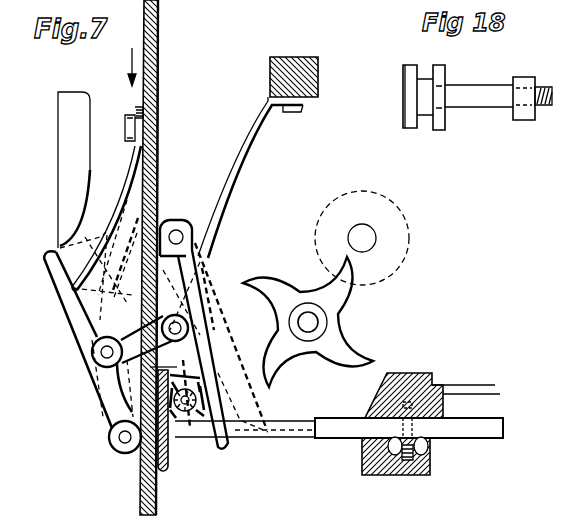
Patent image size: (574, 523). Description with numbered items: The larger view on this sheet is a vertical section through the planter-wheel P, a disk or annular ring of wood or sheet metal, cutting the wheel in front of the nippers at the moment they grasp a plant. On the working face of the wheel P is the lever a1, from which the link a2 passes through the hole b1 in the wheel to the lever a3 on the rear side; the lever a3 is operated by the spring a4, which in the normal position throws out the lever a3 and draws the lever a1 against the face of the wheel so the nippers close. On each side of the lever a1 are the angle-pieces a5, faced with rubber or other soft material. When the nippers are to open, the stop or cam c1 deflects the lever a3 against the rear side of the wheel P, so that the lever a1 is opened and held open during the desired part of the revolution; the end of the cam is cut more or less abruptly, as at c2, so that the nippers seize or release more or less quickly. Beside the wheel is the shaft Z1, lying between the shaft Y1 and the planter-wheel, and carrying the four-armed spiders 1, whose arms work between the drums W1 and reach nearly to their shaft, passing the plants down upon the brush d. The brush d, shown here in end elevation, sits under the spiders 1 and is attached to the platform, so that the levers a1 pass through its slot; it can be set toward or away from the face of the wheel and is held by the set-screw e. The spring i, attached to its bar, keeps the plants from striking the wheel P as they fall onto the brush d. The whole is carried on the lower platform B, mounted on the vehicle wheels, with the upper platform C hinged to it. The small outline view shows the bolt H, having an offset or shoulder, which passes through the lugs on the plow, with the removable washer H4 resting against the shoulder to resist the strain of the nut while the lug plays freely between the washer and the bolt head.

In FIG. 7, the planter-wheel P is at (157, 77).
In FIG. 7, the stop or cam c1 is at (74, 170).
In FIG. 7, the cam end c2 is at (78, 226).
In FIG. 7, the spring a4 is at (106, 218).
In FIG. 7, the lever a3 is at (72, 338).
In FIG. 7, the link a2 is at (160, 332).
In FIG. 7, the hole b1 is at (132, 369).
In FIG. 7, the ratchet wheel o is at (182, 426).
In FIG. 7, the lever a1 is at (226, 449).
In FIG. 7, the angle-pieces a5 is at (166, 472).
In FIG. 7, the brush d is at (342, 428).
In FIG. 7, the spring i is at (230, 176).
In FIG. 7, the four-armed spider 1 is at (330, 298).
In FIG. 7, the shaft Y1 is at (376, 236).
In FIG. 7, the drum W1 is at (392, 269).
In FIG. 7, the shaft Z1 is at (318, 322).
In FIG. 7, the platform C is at (419, 385).
In FIG. 7, the set-screw e is at (423, 446).
In FIG. 7, the platform B is at (406, 462).
In FIG. 18, the removable washer H4 is at (441, 68).
In FIG. 18, the bolt H is at (471, 93).